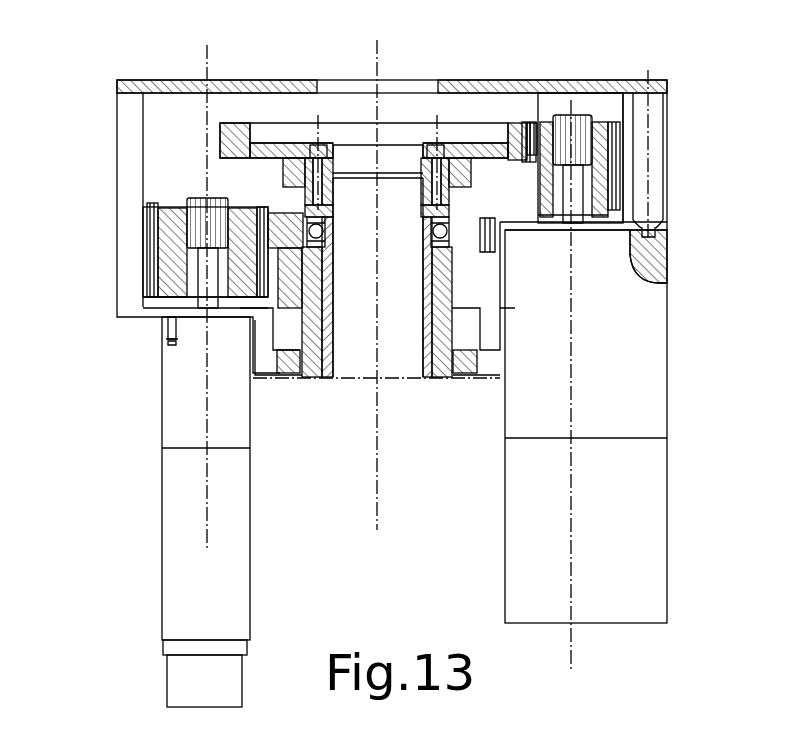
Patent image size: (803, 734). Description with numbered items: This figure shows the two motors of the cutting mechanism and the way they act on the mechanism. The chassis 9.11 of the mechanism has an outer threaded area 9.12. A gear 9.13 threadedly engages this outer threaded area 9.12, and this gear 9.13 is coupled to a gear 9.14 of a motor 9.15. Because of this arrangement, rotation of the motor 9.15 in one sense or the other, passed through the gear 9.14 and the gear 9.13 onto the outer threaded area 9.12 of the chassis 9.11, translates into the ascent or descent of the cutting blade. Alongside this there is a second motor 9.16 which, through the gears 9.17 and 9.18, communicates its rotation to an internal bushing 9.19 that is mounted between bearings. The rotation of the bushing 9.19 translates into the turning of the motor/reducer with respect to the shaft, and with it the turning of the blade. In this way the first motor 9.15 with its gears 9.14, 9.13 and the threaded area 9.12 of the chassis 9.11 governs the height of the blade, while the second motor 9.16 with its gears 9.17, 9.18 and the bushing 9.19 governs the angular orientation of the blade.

The chassis 9.11 is at (439, 355).
The outer threaded area 9.12 is at (315, 360).
The gear 9.13 is at (283, 222).
The gear 9.14 is at (168, 257).
The motor 9.15 is at (173, 517).
The motor 9.16 is at (637, 396).
The gear 9.17 is at (600, 137).
The gear 9.18 is at (228, 128).
The internal bushing 9.19 is at (333, 313).